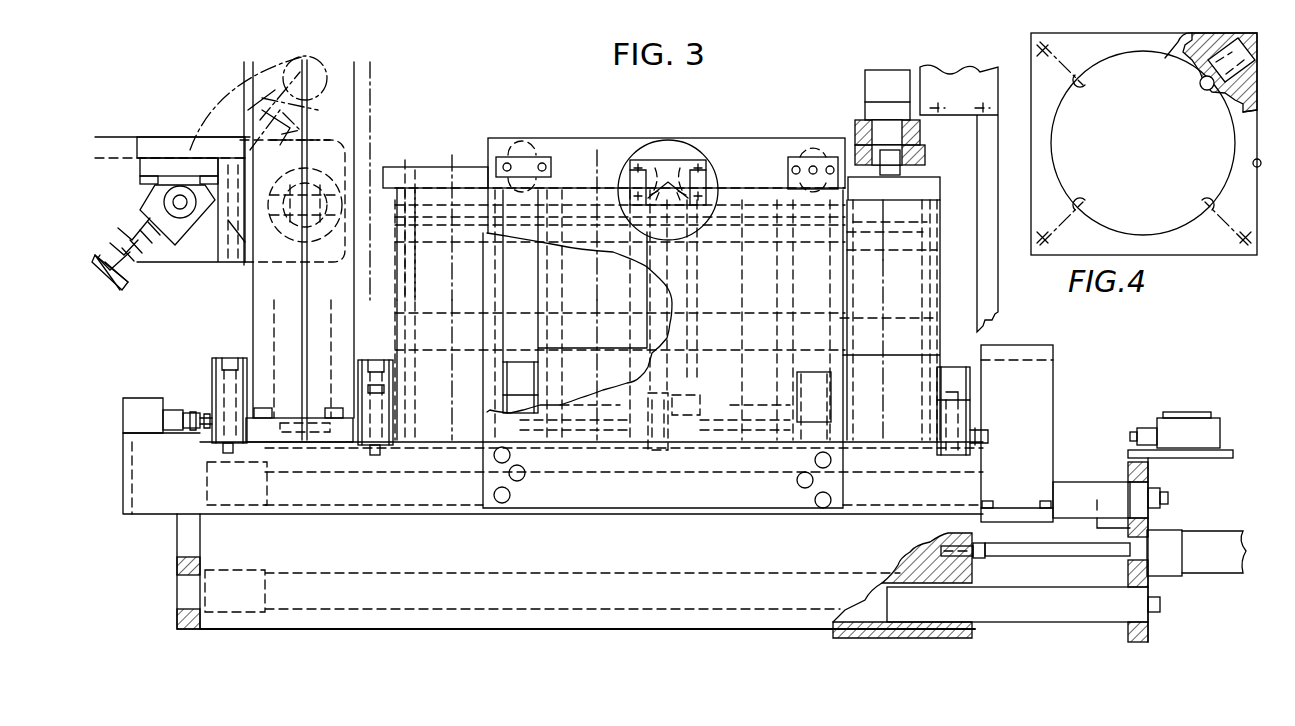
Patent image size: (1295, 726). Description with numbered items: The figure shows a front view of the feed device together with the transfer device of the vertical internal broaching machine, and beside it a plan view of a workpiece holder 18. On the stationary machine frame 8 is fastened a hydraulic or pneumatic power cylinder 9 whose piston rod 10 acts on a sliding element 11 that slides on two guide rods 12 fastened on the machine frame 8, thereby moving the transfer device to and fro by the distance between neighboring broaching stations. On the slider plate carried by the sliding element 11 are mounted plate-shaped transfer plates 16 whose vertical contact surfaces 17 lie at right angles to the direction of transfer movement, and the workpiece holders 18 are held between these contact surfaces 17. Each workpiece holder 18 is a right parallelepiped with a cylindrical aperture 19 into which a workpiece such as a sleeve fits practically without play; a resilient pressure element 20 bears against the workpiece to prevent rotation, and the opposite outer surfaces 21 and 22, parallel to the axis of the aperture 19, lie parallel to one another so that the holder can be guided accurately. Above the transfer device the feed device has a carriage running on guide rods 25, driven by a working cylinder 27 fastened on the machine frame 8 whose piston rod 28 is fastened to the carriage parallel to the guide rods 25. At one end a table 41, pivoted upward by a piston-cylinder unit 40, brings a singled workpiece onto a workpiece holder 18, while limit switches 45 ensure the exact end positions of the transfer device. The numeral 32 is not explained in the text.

In FIG. 3, the machine frame 8 is at (1150, 472).
In FIG. 3, the power cylinder 9 is at (1208, 548).
In FIG. 3, the piston rod 10 is at (1097, 558).
In FIG. 3, the sliding element 11 is at (905, 560).
In FIG. 3, the guide rods 12 is at (1080, 485).
In FIG. 3, the transfer plates 16 is at (234, 362).
In FIG. 3, the contact surfaces 17 is at (692, 385).
In FIG. 3, the workpiece holder 18 is at (412, 365).
In FIG. 4, the workpiece holder 18 is at (1245, 125).
In FIG. 4, the aperture 19 is at (1203, 172).
In FIG. 4, the pressure element 20 is at (1200, 85).
In FIG. 4, the outer surfaces 21 is at (1165, 58).
In FIG. 4, the outer surfaces 22 is at (1031, 73).
In FIG. 3, the guide rods 25 is at (526, 152).
In FIG. 3, the working cylinder 27 is at (678, 162).
In FIG. 3, the piston rod 28 is at (660, 162).
In FIG. 3, the top beam 32 is at (454, 165).
In FIG. 3, the piston-cylinder unit 40 is at (152, 222).
In FIG. 3, the table 41 is at (146, 137).
In FIG. 3, the limit switches 45 is at (135, 408).